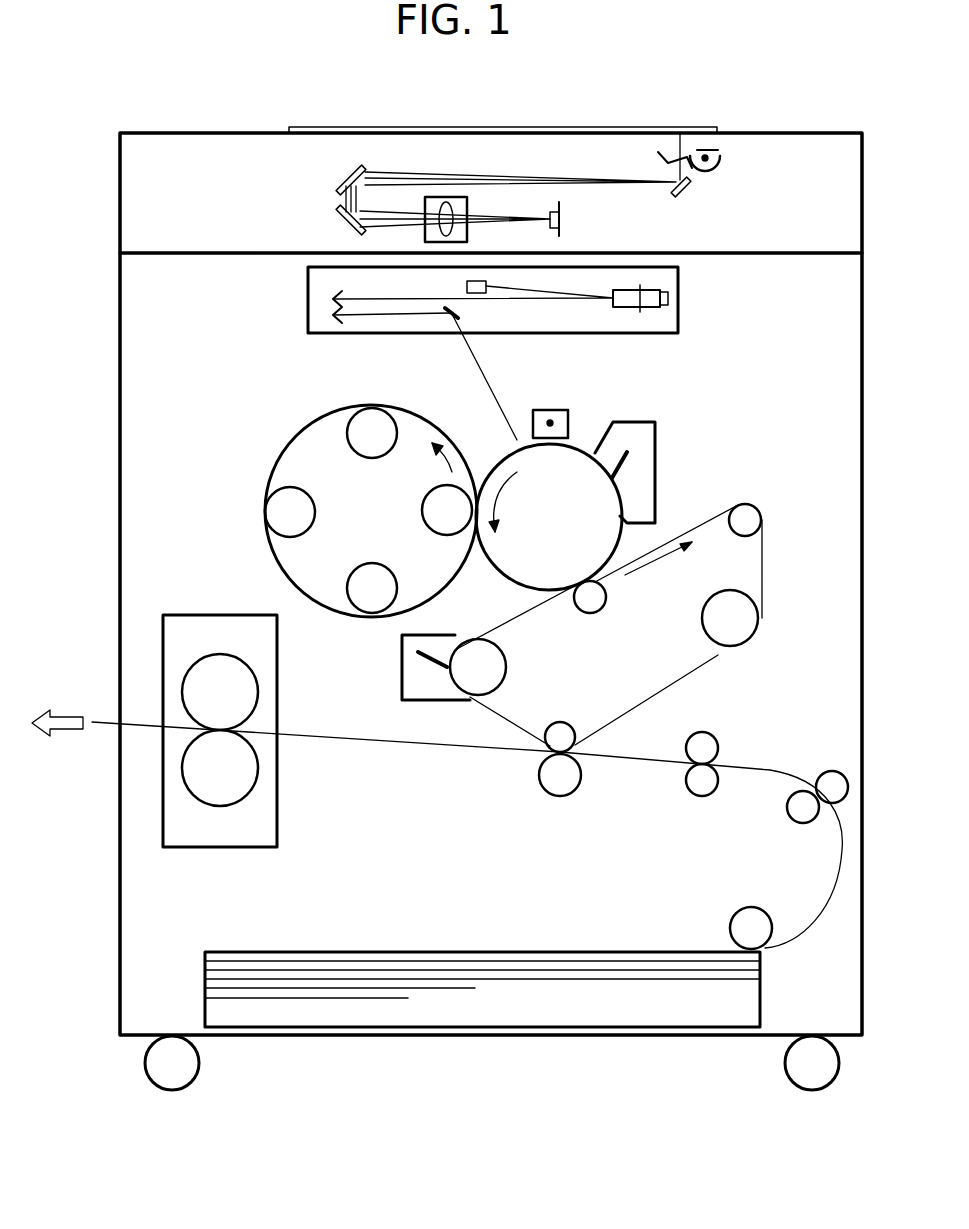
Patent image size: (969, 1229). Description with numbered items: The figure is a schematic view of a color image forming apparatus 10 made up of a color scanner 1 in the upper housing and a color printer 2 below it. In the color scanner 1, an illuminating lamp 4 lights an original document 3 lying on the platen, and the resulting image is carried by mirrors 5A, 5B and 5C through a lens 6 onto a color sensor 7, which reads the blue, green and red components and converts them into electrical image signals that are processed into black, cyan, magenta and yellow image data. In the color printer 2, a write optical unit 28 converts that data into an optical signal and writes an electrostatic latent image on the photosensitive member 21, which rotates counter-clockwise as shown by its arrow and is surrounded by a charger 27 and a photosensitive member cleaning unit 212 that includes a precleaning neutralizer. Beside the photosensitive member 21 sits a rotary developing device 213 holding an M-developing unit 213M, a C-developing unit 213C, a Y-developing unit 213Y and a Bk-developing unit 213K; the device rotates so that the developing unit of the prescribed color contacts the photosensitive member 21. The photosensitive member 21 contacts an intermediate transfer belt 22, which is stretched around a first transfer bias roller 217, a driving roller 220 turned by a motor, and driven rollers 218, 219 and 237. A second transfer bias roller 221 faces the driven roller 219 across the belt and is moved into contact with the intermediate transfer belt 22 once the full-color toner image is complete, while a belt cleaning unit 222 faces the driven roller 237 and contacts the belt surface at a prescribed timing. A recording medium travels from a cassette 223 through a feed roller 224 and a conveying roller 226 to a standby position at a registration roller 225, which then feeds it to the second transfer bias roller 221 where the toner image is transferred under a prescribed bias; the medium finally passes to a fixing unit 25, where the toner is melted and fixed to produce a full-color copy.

The color image forming apparatus 10 is at (88, 132).
The color scanner 1 is at (815, 131).
The color printer 2 is at (863, 441).
The original document 3 is at (712, 128).
The illuminating lamp 4 is at (719, 166).
The mirror 5A is at (684, 194).
The mirror 5B is at (343, 183).
The mirror 5C is at (341, 214).
The lens 6 is at (468, 208).
The color sensor 7 is at (564, 226).
The write optical unit 28 is at (682, 302).
The photosensitive member 21 is at (576, 444).
The charger 27 is at (549, 408).
The photosensitive member cleaning unit 212 is at (656, 445).
The rotary developing device 213 is at (270, 560).
The Bk-developing unit 213K is at (370, 405).
The C-developing unit 213C is at (264, 510).
The M-developing unit 213M is at (422, 510).
The Y-developing unit 213Y is at (370, 616).
The intermediate transfer belt 22 is at (762, 563).
The first transfer bias roller 217 is at (592, 612).
The driven roller 218 is at (757, 518).
The driving roller 220 is at (757, 623).
The driven roller 219 is at (564, 724).
The second transfer bias roller 221 is at (550, 794).
The driven roller 237 is at (505, 662).
The belt cleaning unit 222 is at (402, 682).
The fixing unit 25 is at (172, 616).
The registration roller 225 is at (722, 722).
The conveying roller 226 is at (824, 772).
The feed roller 224 is at (748, 908).
The cassette 223 is at (197, 965).